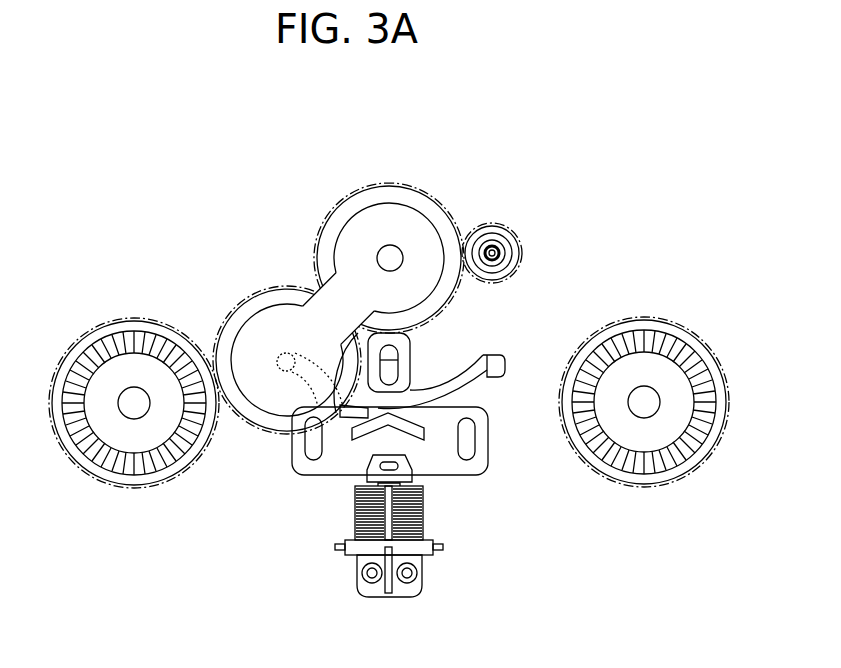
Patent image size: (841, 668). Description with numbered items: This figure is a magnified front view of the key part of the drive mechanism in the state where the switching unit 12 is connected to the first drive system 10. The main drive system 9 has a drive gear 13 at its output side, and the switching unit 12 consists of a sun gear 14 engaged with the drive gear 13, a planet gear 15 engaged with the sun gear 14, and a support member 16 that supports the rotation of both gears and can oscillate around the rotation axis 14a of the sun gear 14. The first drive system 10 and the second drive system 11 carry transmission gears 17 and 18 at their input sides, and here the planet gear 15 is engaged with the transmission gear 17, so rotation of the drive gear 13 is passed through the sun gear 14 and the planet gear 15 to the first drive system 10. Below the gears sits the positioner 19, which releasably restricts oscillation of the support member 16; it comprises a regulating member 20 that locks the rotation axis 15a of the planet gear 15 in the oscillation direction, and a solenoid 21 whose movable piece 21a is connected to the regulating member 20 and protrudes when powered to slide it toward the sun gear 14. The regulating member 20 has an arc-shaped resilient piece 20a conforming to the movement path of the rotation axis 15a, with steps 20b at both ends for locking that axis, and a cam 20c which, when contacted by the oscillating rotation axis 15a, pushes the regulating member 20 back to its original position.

The main drive system 9 is at (508, 215).
The first drive system 10 is at (134, 353).
The second drive system 11 is at (644, 353).
The switching unit 12 is at (357, 160).
The drive gear 13 is at (507, 226).
The sun gear 14 is at (338, 207).
The rotation axis of sun gear 14a is at (390, 253).
The planet gear 15 is at (240, 298).
The rotation axis of planet gear 15a is at (285, 367).
The support member 16 is at (322, 315).
The transmission gear 17 is at (121, 318).
The transmission gear 18 is at (664, 318).
The positioner 19 is at (515, 488).
The regulating member 20 is at (425, 406).
The resilient piece 20a is at (443, 392).
The step 20b is at (495, 363).
The cam 20c is at (427, 433).
The solenoid 21 is at (394, 526).
The movable piece 21a is at (367, 470).